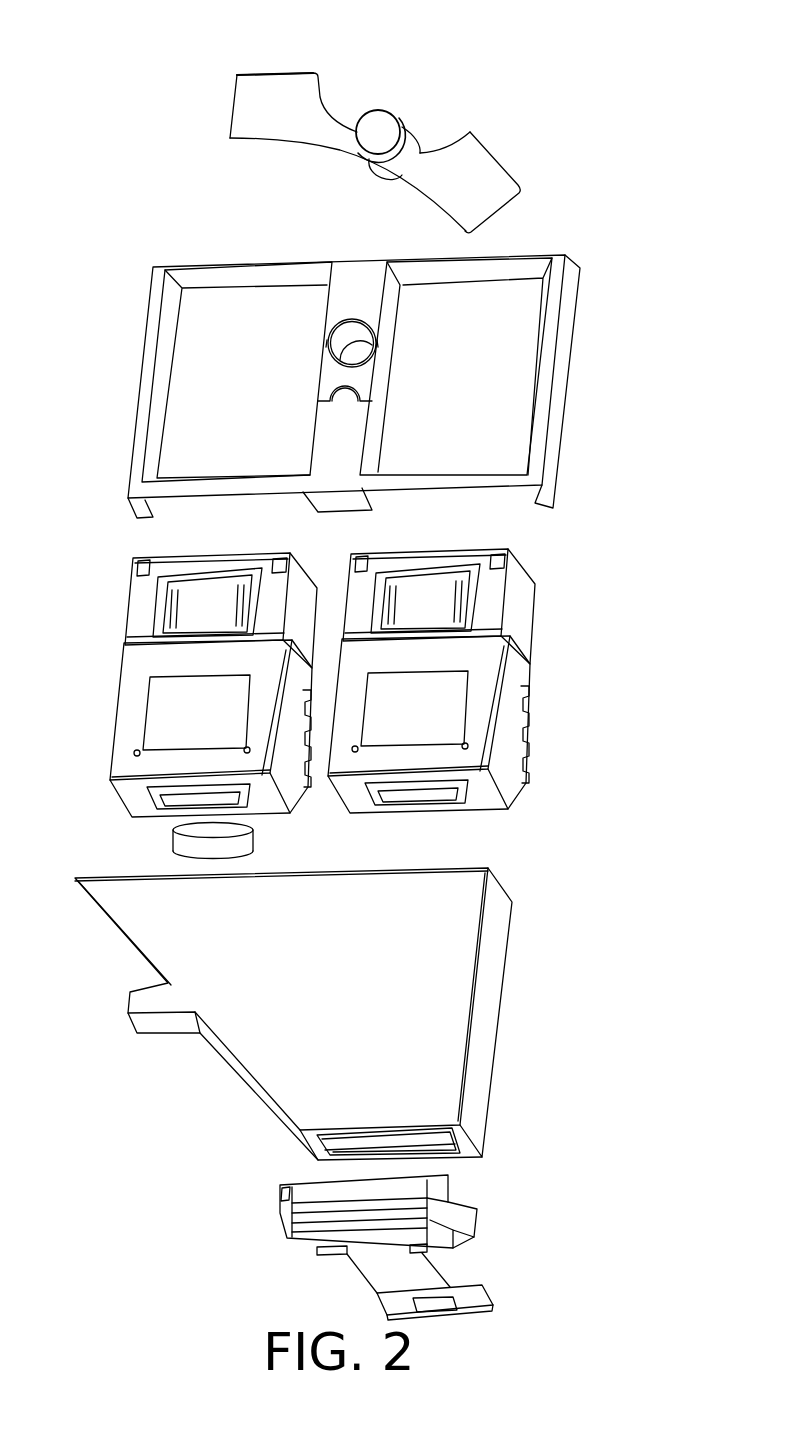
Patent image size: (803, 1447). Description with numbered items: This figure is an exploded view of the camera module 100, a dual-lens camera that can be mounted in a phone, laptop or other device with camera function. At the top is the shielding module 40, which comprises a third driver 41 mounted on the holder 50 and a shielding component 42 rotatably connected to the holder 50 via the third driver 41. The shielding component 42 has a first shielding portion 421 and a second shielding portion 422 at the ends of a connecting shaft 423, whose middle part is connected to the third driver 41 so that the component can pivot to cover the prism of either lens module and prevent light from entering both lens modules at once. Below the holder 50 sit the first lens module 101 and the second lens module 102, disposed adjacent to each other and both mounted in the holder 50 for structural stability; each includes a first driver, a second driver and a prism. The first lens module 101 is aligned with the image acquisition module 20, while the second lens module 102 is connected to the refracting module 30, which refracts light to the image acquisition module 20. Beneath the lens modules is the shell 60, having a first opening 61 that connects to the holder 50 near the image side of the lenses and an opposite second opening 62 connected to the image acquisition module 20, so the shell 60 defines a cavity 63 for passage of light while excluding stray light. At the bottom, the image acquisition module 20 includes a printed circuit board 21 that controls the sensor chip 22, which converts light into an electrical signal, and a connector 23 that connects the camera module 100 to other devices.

The camera module 100 is at (394, 31).
The shielding module 40 is at (645, 90).
The third driver 41 is at (503, 172).
The shielding component 42 is at (595, 67).
The first shielding portion 421 is at (467, 145).
The second shielding portion 422 is at (300, 103).
The connecting shaft 423 is at (382, 138).
The holder 50 is at (340, 435).
The first lens module 101 is at (598, 560).
The second lens module 102 is at (67, 562).
The refracting module 30 is at (180, 835).
The shell 60 is at (268, 1070).
The first opening 61 is at (457, 863).
The second opening 62 is at (462, 1140).
The cavity 63 is at (416, 1146).
The image acquisition module 20 is at (212, 1192).
The printed circuit board 21 is at (378, 1258).
The sensor chip 22 is at (320, 1193).
The connector 23 is at (397, 1305).